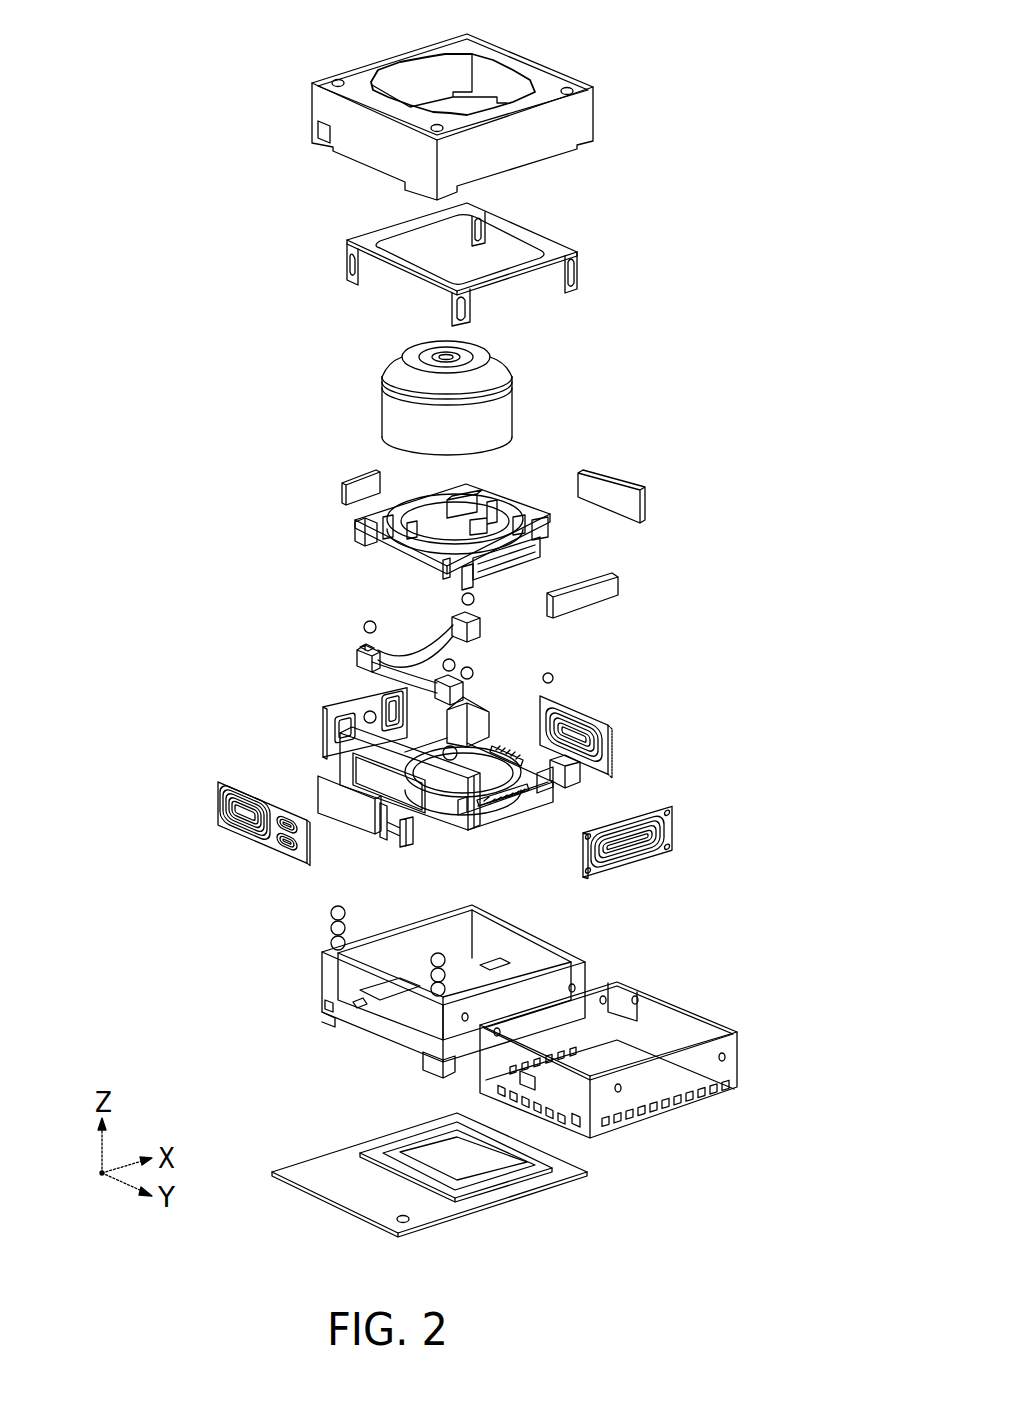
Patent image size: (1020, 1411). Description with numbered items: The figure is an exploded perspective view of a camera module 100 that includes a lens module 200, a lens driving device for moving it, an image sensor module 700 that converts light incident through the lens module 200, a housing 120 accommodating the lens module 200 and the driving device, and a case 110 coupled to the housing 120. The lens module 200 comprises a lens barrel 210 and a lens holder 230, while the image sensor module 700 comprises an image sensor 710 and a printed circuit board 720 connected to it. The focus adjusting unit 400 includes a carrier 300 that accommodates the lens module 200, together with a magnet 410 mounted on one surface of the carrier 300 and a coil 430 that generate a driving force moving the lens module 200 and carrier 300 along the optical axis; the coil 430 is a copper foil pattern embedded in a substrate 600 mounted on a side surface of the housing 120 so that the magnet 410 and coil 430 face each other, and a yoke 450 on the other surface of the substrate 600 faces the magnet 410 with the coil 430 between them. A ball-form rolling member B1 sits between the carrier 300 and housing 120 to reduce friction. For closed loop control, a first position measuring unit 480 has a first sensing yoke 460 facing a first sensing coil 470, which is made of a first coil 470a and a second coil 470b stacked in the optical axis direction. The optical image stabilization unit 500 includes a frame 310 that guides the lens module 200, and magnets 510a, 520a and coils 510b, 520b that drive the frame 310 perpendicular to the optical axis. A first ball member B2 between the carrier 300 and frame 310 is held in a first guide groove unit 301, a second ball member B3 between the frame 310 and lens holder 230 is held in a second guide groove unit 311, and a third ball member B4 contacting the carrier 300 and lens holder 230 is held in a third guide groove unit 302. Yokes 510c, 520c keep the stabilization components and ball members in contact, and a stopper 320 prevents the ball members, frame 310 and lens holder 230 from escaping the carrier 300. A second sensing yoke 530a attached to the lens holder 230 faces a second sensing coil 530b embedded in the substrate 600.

The camera module 100 is at (238, 33).
The case 110 is at (583, 120).
The housing 120 is at (325, 975).
The lens module 200 is at (222, 393).
The lens barrel 210 is at (388, 413).
The lens holder 230 is at (355, 540).
The carrier 300 is at (506, 793).
The first guide groove unit 301 is at (470, 742).
The third guide groove unit 302 is at (577, 764).
The frame 310 is at (350, 629).
The second guide groove unit 311 is at (357, 648).
The stopper 320 is at (548, 246).
The focus adjusting unit 400 is at (128, 770).
The magnet 410 is at (325, 792).
The coil 430 is at (222, 810).
The yoke 450 is at (492, 1086).
The first sensing yoke 460 is at (368, 832).
The first sensing coil 470 is at (112, 878).
The first coil 470a is at (288, 822).
The second coil 470b is at (288, 845).
The first position measuring unit 480 is at (135, 968).
The optical image stabilization unit 500 is at (722, 656).
The magnet 510a is at (608, 485).
The coil 510b is at (590, 717).
The yoke 510c is at (505, 748).
The magnet 520a is at (605, 593).
The coil 520b is at (672, 830).
The yoke 520c is at (530, 818).
The second sensing yoke 530a is at (360, 481).
The second sensing coil 530b is at (330, 717).
The substrate 600 is at (678, 1088).
The image sensor module 700 is at (650, 1205).
The image sensor 710 is at (483, 1162).
The printed circuit board 720 is at (417, 1203).
The rolling member B1 is at (437, 952).
The first ball member B2 is at (473, 672).
The second ball member B3 is at (370, 621).
The third ball member B4 is at (553, 678).